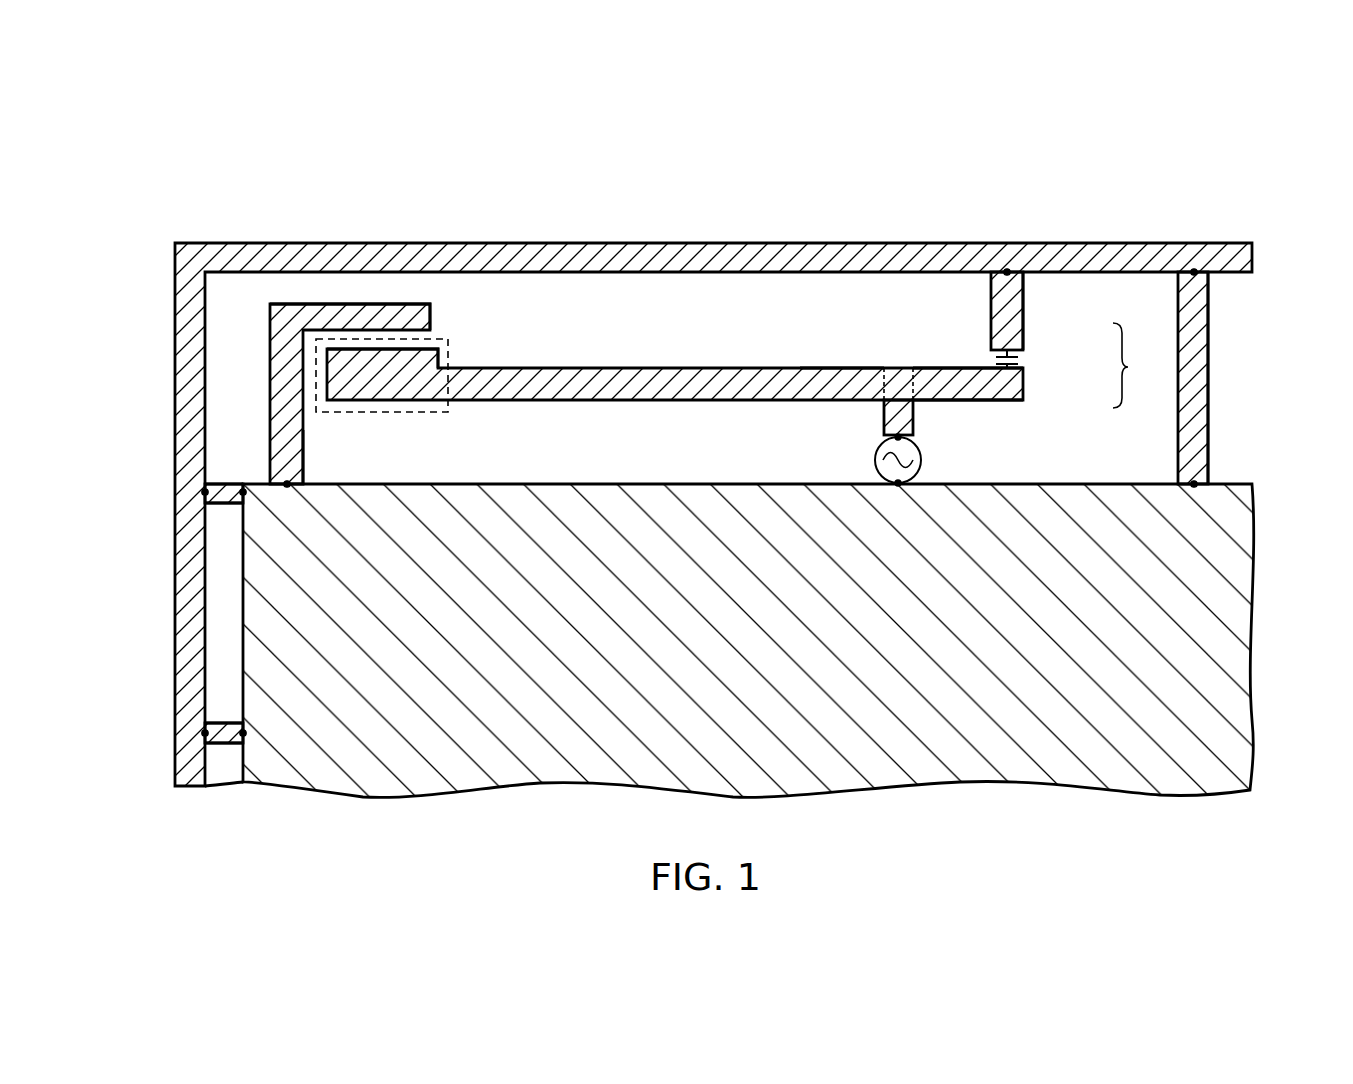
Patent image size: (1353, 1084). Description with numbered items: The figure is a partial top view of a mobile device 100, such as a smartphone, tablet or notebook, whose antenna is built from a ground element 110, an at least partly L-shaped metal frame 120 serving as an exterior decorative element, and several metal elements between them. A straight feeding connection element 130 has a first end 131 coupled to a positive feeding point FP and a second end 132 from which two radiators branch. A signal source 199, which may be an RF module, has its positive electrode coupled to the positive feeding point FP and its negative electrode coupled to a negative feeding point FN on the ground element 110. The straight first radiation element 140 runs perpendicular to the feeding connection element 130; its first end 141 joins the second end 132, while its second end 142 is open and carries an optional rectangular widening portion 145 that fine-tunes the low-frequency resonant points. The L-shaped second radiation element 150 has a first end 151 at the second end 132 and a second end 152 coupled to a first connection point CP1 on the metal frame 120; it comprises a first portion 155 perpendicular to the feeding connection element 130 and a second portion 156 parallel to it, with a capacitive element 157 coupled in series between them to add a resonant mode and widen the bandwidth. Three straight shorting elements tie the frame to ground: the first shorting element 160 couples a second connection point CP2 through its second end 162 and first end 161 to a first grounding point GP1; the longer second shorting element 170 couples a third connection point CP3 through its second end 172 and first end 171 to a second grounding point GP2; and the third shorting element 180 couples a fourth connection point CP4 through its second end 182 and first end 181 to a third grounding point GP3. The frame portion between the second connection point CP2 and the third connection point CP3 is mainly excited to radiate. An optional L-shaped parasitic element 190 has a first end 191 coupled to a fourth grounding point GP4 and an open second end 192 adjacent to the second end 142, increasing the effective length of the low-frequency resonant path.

The mobile device 100 is at (711, 475).
The ground element 110 is at (1200, 612).
The metal frame 120 is at (583, 262).
The feeding connection element 130 is at (885, 420).
The first end of feeding connection element 131 is at (913, 418).
The second end of feeding connection element 132 is at (897, 386).
The first radiation element 140 is at (584, 381).
The first end of first radiation element 141 is at (882, 383).
The second end of first radiation element 142 is at (432, 358).
The rectangular widening portion 145 is at (425, 413).
The second radiation element 150 is at (1043, 340).
The first end of second radiation element 151 is at (927, 385).
The second end of second radiation element 152 is at (1010, 297).
The first portion of second radiation element 155 is at (975, 387).
The second portion of second radiation element 156 is at (1005, 310).
The capacitive element 157 is at (1002, 360).
The first shorting element 160 is at (223, 492).
The first end of first shorting element 161 is at (243, 483).
The second end of first shorting element 162 is at (223, 500).
The second shorting element 170 is at (1200, 380).
The first end of second shorting element 171 is at (1202, 473).
The second end of second shorting element 172 is at (1200, 282).
The third shorting element 180 is at (218, 733).
The first end of third shorting element 181 is at (225, 732).
The second end of third shorting element 182 is at (221, 745).
The parasitic element 190 is at (292, 384).
The first end of parasitic element 191 is at (300, 480).
The second end of parasitic element 192 is at (405, 314).
The signal source 199 is at (922, 460).
The first connection point CP1 is at (1007, 271).
The second connection point CP2 is at (204, 493).
The third connection point CP3 is at (1194, 271).
The fourth connection point CP4 is at (204, 735).
The first grounding point GP1 is at (243, 492).
The second grounding point GP2 is at (1194, 484).
The third grounding point GP3 is at (243, 733).
The fourth grounding point GP4 is at (287, 485).
The positive feeding point FP is at (887, 447).
The negative feeding point FN is at (887, 477).